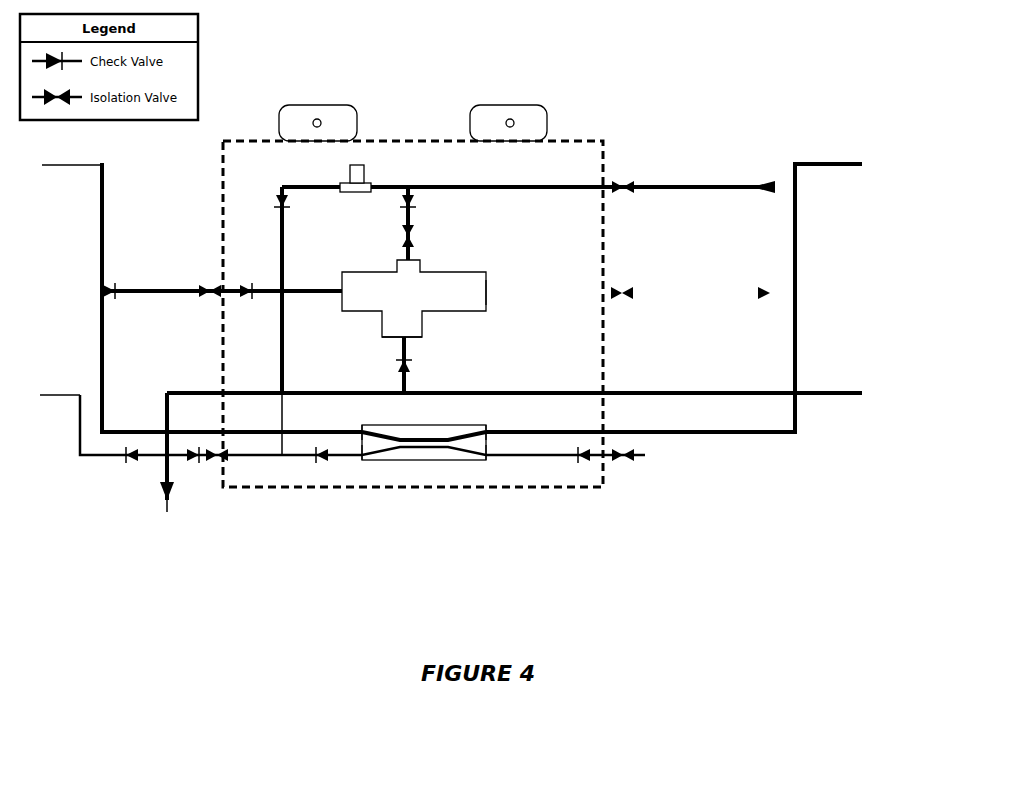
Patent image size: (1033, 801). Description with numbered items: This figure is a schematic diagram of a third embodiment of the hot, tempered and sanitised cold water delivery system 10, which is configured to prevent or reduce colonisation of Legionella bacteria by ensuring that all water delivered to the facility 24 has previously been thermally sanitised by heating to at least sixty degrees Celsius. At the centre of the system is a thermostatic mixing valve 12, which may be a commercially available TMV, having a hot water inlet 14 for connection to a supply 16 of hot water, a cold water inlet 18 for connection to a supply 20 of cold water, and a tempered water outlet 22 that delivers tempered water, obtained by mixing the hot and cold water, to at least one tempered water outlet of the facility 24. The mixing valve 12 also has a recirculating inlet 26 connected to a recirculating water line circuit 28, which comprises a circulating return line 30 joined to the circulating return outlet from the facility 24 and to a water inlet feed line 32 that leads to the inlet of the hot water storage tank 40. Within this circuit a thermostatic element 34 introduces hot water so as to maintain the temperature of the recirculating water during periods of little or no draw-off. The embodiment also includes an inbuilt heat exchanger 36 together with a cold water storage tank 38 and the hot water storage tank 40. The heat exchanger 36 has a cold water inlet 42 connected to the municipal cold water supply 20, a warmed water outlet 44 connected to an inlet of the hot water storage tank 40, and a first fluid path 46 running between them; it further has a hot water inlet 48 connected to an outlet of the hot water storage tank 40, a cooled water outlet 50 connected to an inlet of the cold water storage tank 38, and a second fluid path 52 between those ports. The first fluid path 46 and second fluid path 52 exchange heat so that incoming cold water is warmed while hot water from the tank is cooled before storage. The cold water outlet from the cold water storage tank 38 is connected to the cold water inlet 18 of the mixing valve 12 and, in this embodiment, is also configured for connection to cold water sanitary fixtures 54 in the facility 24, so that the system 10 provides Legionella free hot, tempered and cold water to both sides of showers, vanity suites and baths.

The tempered water delivery system 10 is at (78, 582).
The thermostatic mixing valve 12 is at (482, 268).
The hot water inlet 14 is at (350, 298).
The supply of hot water 16 is at (275, 293).
The cold water inlet 18 is at (405, 337).
The supply of cold water 20 is at (405, 375).
The tempered water outlet 22 is at (487, 293).
The facility 24 is at (742, 175).
The recirculating inlet 26 is at (410, 254).
The recirculating water line circuit 28 is at (455, 186).
The circulating return line 30 is at (639, 184).
The water inlet feed line 32 is at (99, 456).
The thermostatic element 34 is at (356, 165).
The heat exchanger 36 is at (426, 486).
The cold water storage tank 38 is at (863, 292).
The hot water storage tank 40 is at (0, 315).
The cold water inlet 42 is at (486, 452).
The warmed water outlet 44 is at (361, 456).
The first fluid path 46 is at (431, 448).
The hot water inlet 48 is at (360, 433).
The cooled water outlet 50 is at (488, 434).
The second fluid path 52 is at (422, 436).
The cold water sanitary fixtures 54 is at (167, 507).